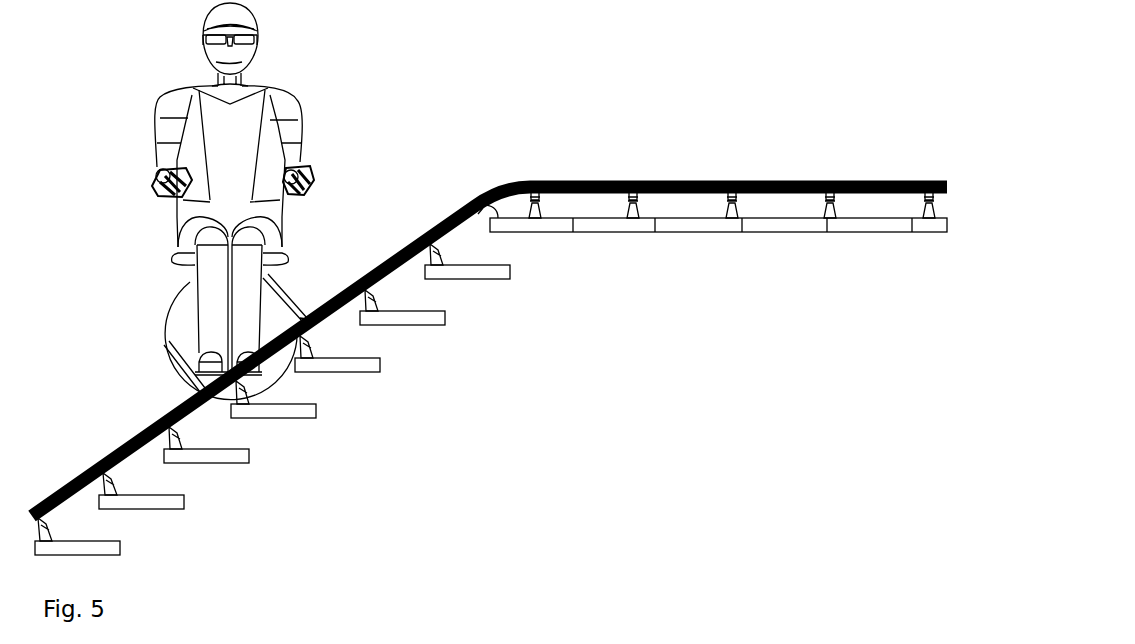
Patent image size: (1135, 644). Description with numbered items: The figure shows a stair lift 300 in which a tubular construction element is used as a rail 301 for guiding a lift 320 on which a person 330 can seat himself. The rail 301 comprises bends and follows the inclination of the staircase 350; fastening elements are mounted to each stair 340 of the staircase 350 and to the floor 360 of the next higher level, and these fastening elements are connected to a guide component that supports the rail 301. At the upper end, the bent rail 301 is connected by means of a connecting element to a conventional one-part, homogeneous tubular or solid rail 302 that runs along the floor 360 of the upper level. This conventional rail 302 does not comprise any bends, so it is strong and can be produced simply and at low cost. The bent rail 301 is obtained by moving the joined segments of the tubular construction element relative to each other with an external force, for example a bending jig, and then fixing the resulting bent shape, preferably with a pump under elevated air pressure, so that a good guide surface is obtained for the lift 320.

The stair lift 300 is at (352, 192).
The rail 301 is at (383, 257).
The conventional rail 302 is at (680, 181).
The lift 320 is at (176, 261).
The person 330 is at (292, 101).
The stair 340 is at (437, 318).
The staircase 350 is at (540, 278).
The floor 360 is at (743, 232).